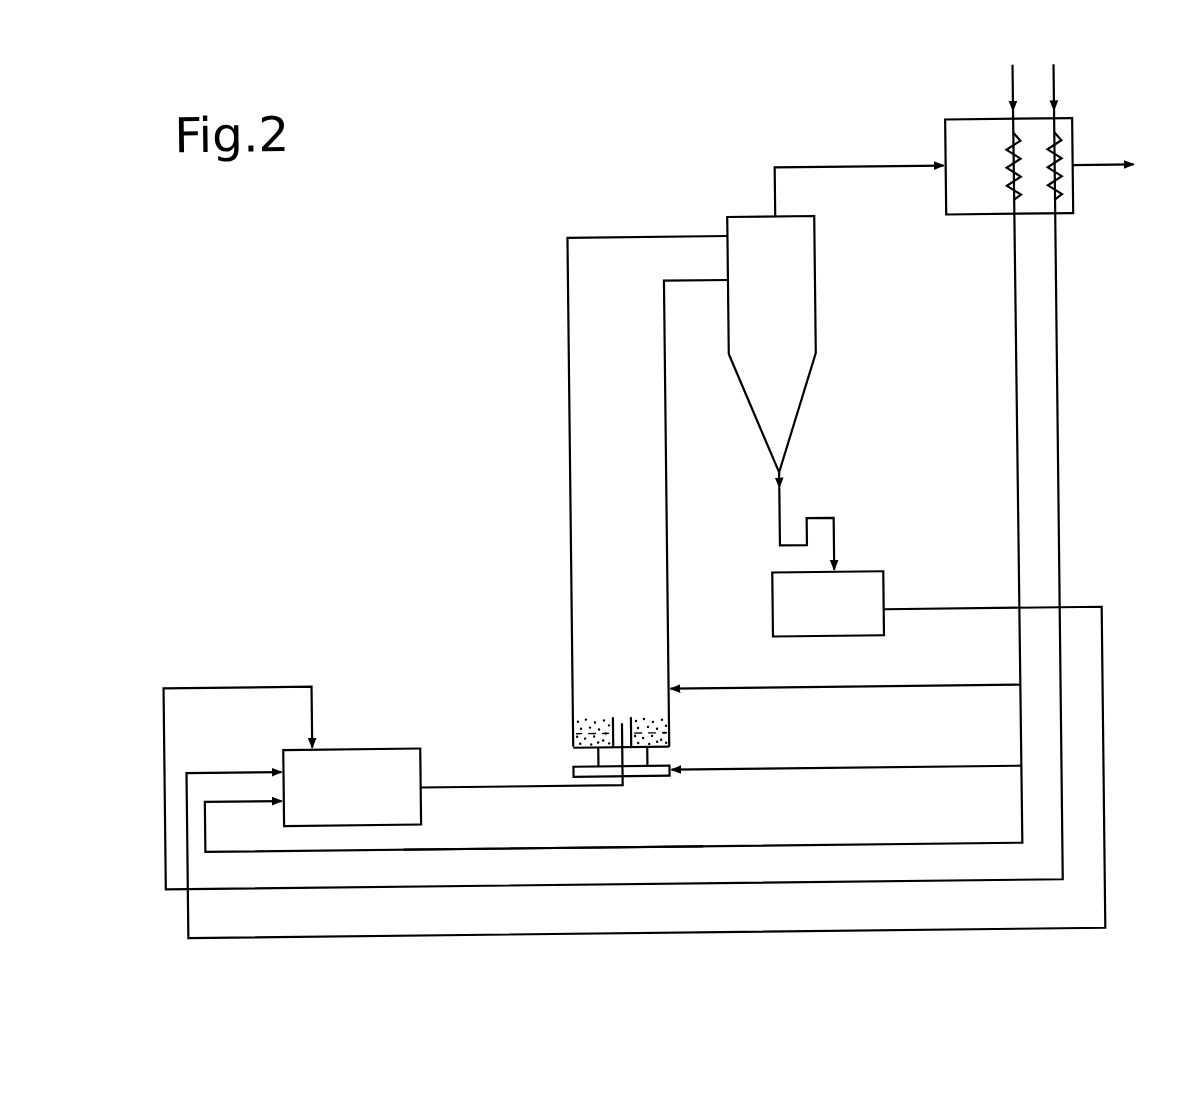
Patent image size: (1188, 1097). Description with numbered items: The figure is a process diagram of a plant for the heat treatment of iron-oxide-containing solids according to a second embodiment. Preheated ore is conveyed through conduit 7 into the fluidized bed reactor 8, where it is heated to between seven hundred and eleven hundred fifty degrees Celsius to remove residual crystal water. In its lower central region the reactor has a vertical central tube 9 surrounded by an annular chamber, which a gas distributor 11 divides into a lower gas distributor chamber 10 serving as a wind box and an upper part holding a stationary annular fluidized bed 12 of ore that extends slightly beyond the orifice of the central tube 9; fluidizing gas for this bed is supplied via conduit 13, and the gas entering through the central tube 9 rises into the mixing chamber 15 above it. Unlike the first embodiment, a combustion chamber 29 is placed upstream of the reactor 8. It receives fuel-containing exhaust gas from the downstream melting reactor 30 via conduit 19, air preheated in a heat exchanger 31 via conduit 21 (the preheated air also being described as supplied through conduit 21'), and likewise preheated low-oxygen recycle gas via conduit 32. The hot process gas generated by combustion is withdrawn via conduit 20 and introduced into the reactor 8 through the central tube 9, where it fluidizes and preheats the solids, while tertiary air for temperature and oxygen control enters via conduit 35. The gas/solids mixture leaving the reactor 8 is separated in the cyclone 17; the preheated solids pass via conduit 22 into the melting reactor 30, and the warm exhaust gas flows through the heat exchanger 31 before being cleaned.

The conduit 7 is at (568, 698).
The fluidized bed reactor 8 is at (557, 352).
The central tube 9 is at (645, 718).
The gas distributor chamber 10 is at (571, 741).
The gas distributor 11 is at (573, 732).
The annular fluidized bed 12 is at (596, 709).
The conduit 13 is at (868, 766).
The mixing chamber 15 is at (586, 496).
The cyclone 17 is at (808, 307).
The conduit 19 is at (1101, 767).
The conduit 20 is at (510, 788).
The conduit 21 is at (610, 458).
The conduit 21' is at (569, 816).
The conduit 22 is at (781, 504).
The combustion chamber 29 is at (363, 764).
The melting reactor 30 is at (884, 591).
The heat exchanger 31 is at (1070, 135).
The conduit 32 is at (1062, 383).
The conduit 35 is at (904, 685).